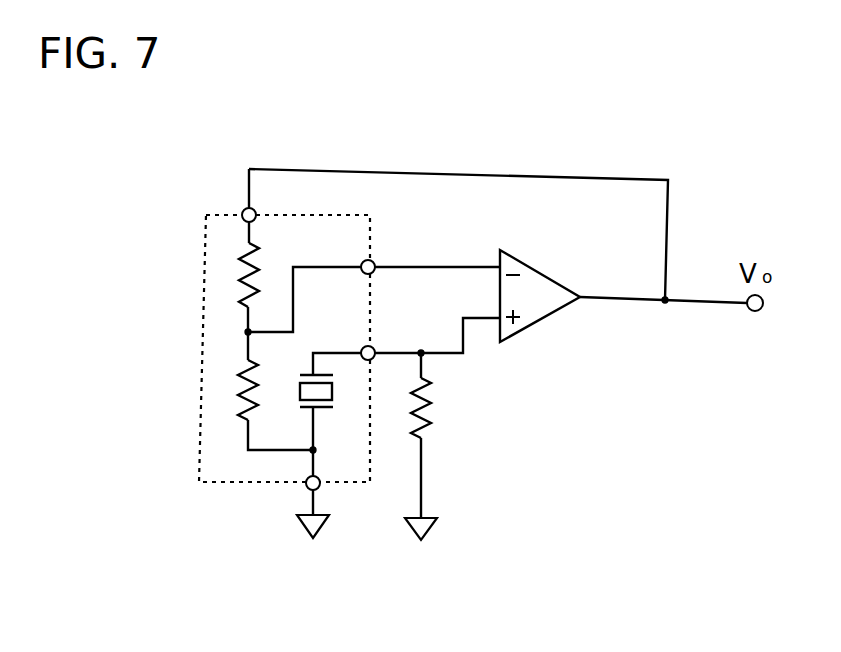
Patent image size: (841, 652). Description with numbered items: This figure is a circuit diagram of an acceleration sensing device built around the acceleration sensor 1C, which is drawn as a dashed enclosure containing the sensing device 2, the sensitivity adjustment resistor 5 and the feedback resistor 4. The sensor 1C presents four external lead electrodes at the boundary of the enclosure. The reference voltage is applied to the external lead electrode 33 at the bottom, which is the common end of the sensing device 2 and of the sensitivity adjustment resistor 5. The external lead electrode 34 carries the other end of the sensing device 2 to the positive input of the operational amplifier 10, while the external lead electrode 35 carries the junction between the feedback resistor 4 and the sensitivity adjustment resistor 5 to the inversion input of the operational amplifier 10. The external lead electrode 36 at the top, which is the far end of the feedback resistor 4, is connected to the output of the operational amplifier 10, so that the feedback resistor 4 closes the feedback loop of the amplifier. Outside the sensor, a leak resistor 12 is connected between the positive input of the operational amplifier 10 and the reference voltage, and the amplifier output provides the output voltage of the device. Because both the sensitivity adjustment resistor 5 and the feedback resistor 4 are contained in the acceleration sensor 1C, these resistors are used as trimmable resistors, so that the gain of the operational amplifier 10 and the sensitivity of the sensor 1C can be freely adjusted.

The acceleration sensor 1C is at (203, 360).
The external lead electrode 36 is at (243, 209).
The feedback resistor 4 is at (241, 282).
The sensitivity adjustment resistor 5 is at (239, 394).
The sensing device 2 is at (333, 392).
The external lead electrode 33 is at (318, 489).
The external lead electrode 35 is at (375, 262).
The external lead electrode 34 is at (375, 347).
The operational amplifier 10 is at (540, 322).
The leak resistor 12 is at (432, 405).